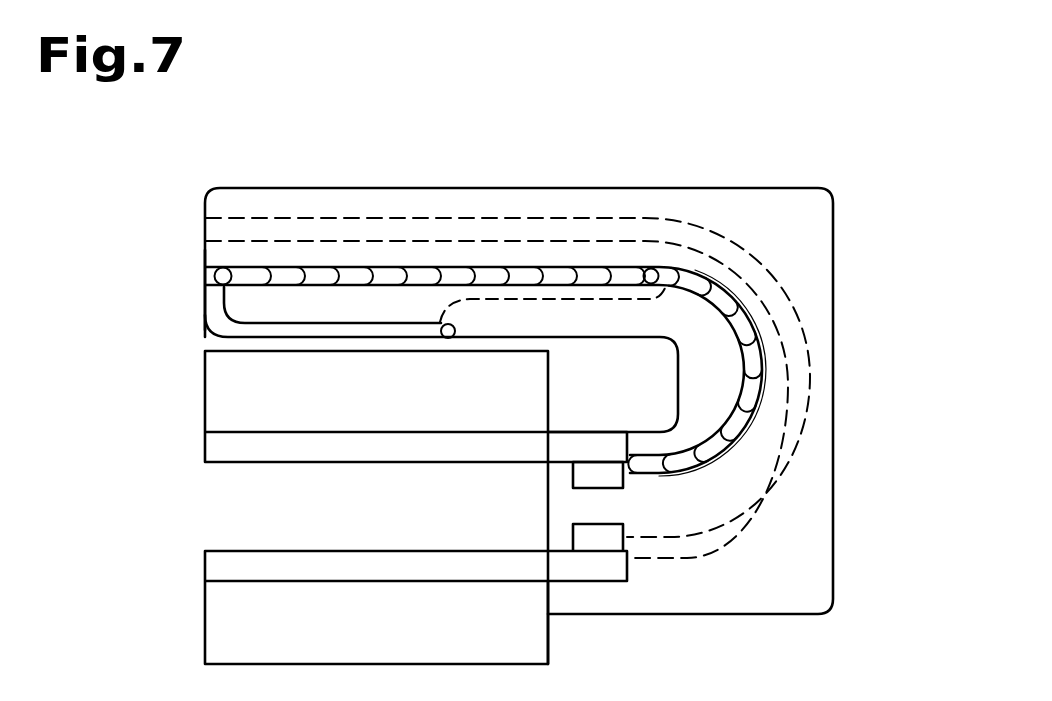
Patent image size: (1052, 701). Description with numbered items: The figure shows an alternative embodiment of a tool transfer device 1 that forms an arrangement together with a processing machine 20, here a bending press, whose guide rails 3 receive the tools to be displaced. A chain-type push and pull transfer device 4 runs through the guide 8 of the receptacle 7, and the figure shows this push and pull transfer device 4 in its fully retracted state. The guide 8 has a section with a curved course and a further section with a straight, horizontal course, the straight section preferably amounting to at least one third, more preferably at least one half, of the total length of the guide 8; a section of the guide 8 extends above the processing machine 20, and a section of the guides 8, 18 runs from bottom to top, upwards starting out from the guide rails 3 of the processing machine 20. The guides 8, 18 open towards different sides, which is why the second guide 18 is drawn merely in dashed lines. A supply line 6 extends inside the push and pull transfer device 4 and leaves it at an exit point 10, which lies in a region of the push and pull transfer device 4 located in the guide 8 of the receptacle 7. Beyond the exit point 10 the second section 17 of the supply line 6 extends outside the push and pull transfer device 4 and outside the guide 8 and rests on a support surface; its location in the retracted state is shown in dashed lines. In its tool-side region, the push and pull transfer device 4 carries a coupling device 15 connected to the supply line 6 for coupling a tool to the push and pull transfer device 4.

The tool transfer device 1 is at (864, 232).
The guide rails 3 is at (353, 462).
The push and pull transfer device 4 is at (746, 324).
The supply line 6 is at (347, 323).
The receptacle 7 is at (617, 185).
The guide 8 is at (763, 360).
The exit point 10 is at (216, 253).
The coupling device 15 is at (573, 478).
The second section 17 is at (377, 318).
The second guide 18 is at (800, 462).
The processing machine 20 is at (172, 399).